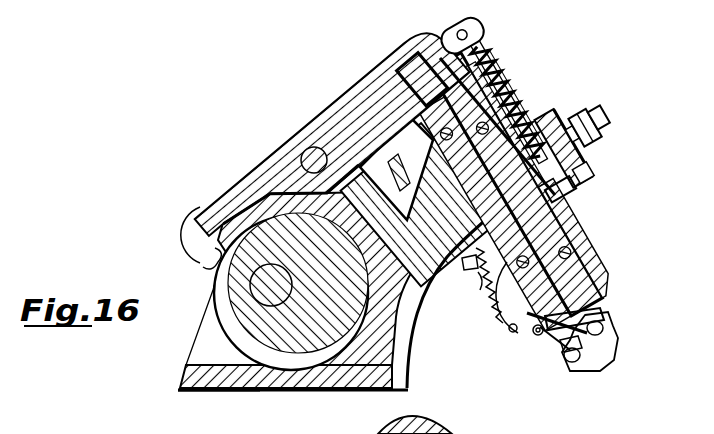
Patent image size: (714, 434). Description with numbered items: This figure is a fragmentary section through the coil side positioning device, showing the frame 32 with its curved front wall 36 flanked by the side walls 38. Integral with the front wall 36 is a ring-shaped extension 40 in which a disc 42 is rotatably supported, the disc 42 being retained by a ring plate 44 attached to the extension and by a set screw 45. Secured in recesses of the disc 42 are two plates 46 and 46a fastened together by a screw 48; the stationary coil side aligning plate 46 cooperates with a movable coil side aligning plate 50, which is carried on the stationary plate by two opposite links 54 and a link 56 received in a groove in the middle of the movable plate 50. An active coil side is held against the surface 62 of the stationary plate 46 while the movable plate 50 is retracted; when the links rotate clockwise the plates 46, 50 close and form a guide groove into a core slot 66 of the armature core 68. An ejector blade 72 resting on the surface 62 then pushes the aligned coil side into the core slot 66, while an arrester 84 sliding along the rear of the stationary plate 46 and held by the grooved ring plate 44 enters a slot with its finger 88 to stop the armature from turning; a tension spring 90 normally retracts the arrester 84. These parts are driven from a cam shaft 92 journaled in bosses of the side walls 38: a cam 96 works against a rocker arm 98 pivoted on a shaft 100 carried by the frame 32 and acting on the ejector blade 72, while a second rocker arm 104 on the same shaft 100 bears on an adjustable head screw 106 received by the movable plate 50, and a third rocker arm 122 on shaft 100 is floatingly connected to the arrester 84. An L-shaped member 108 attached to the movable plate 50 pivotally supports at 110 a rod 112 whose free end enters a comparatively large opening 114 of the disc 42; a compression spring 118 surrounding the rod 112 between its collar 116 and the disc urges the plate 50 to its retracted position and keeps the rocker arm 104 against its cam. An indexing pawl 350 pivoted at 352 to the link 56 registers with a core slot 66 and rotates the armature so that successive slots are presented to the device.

The frame 32 is at (190, 389).
The curved front wall 36 is at (413, 309).
The side walls 38 is at (198, 342).
The ring-shaped extension 40 is at (548, 118).
The disc 42 is at (578, 175).
The ring plate 44 is at (595, 153).
The set screw 45 is at (606, 118).
The stationary coil side aligning plate 46 is at (503, 286).
The plate 46a is at (484, 276).
The screw 48 is at (472, 262).
The movable coil side aligning plate 50 is at (571, 232).
The links 54 is at (452, 94).
The link 56 is at (571, 220).
The surface 62 is at (570, 308).
The core slot 66 is at (604, 330).
The armature core 68 is at (608, 350).
The ejector blade 72 is at (590, 278).
The arrester 84 is at (489, 299).
The finger 88 is at (561, 354).
The tension spring 90 is at (509, 329).
The cam shaft 92 is at (247, 327).
The cam 96 is at (345, 316).
The rocker arm 98 is at (255, 161).
The shaft 100 is at (318, 147).
The rocker arm 104 is at (214, 270).
The adjustable head screw 106 is at (442, 425).
The L-shaped member 108 is at (447, 52).
The pivot 110 is at (471, 31).
The rod 112 is at (506, 90).
The opening 114 is at (558, 188).
The collar 116 is at (479, 48).
The compression spring 118 is at (500, 78).
The rocker arm 122 is at (196, 211).
The indexing pawl 350 is at (562, 333).
The pivot 352 is at (534, 333).